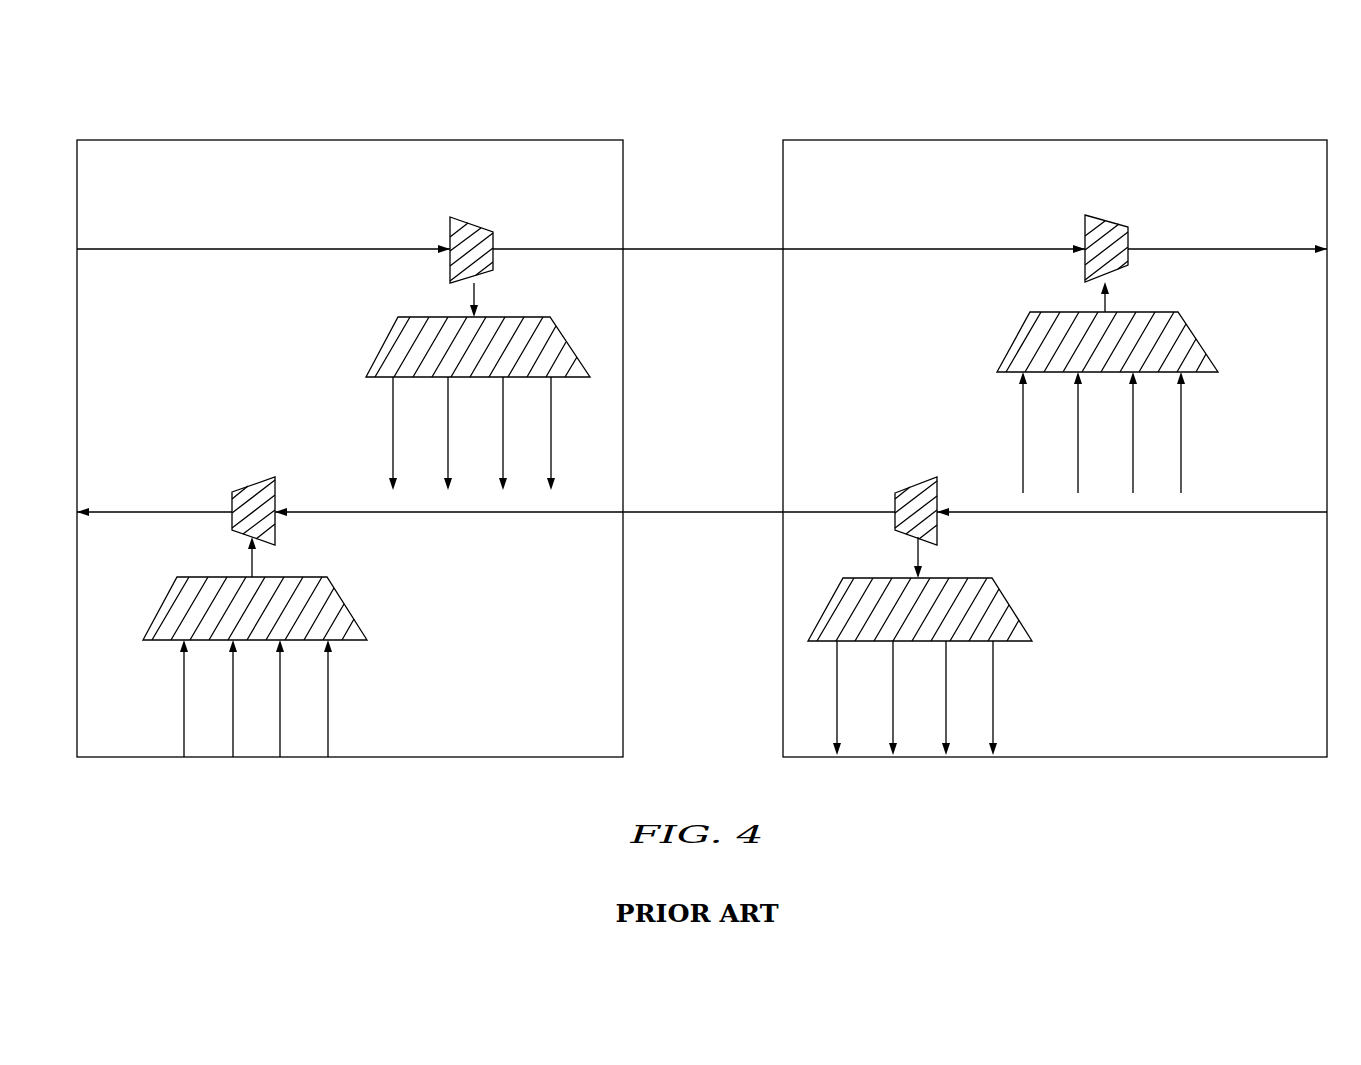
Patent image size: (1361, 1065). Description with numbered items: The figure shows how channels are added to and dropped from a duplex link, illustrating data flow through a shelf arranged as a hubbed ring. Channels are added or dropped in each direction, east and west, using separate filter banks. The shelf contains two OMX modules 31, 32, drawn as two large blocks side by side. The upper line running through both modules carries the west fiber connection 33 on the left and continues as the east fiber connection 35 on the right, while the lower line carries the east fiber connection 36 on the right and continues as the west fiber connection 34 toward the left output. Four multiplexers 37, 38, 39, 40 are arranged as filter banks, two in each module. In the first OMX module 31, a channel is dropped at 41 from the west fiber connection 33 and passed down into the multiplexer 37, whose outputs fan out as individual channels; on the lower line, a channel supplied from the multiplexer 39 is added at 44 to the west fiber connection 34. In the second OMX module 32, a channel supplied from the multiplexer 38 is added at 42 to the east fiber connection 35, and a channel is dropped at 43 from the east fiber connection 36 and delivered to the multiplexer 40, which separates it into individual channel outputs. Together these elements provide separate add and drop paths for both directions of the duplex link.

The OMX module 31 is at (352, 138).
The OMX module 32 is at (1055, 138).
The west fiber connection 33 is at (243, 252).
The west fiber connection 34 is at (458, 515).
The east fiber connection 35 is at (1230, 243).
The east fiber connection 36 is at (1135, 514).
The multiplexer 37 is at (578, 339).
The multiplexer 38 is at (1196, 333).
The multiplexer 39 is at (362, 607).
The multiplexer 40 is at (1018, 599).
The drop point 41 is at (458, 104).
The add point 42 is at (968, 104).
The drop point 43 is at (906, 426).
The add point 44 is at (256, 426).